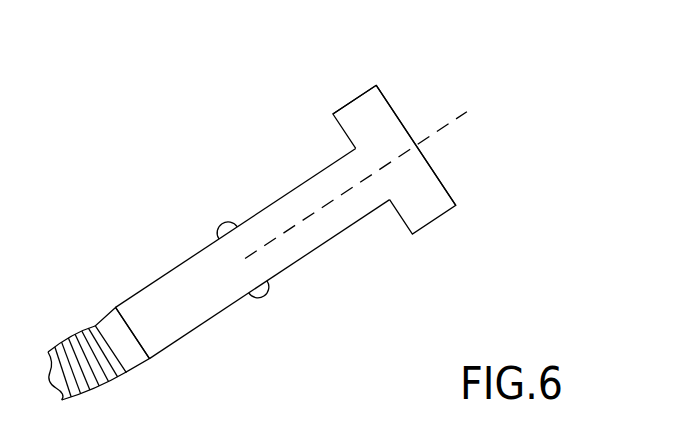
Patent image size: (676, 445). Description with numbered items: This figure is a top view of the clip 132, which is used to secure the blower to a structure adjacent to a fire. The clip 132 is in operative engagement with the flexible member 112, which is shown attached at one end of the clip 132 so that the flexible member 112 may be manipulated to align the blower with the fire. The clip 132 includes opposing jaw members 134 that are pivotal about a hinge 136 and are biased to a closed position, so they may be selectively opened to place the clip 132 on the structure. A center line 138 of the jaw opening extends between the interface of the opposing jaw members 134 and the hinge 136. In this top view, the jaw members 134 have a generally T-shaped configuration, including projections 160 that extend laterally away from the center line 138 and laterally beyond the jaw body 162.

The flexible member 112 is at (88, 393).
The clip 132 is at (308, 226).
The opposing jaw members 134 is at (418, 163).
The hinge 136 is at (258, 297).
The center line of the jaw opening 138 is at (448, 123).
The projections 160 is at (358, 127).
The jaw body 162 is at (313, 250).